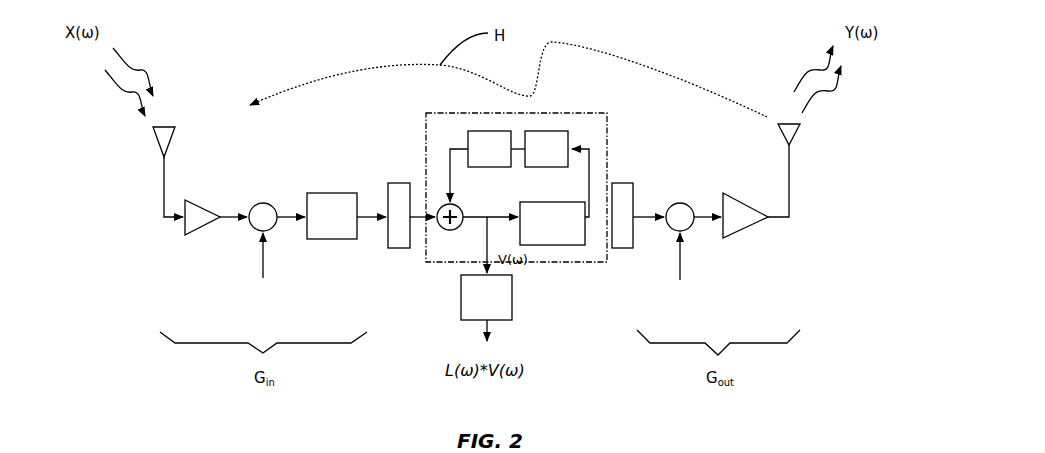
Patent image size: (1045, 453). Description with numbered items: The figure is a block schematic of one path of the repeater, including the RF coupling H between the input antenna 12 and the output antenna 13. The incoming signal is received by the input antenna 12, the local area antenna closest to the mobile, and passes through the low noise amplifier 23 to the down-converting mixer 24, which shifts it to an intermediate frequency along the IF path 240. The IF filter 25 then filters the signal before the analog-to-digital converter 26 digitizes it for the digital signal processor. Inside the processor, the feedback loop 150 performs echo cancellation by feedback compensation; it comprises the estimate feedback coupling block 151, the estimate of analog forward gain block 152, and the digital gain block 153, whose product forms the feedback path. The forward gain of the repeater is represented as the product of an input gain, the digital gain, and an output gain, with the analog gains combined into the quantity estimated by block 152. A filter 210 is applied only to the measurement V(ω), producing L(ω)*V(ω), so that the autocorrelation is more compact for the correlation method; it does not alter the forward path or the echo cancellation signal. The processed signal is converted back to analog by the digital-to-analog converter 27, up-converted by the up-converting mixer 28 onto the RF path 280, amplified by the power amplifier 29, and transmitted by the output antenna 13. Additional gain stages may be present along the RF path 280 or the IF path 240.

The input antenna 12 is at (155, 135).
The output antenna 13 is at (793, 138).
The low noise amplifier 23 is at (203, 205).
The down-converting mixer 24 is at (268, 203).
The IF path 240 is at (293, 219).
The IF filter 25 is at (337, 193).
The analog-to-digital converter 26 is at (399, 250).
The feedback loop 150 is at (426, 142).
The estimate feedback coupling block 151 is at (490, 131).
The estimate of analog forward gain block 152 is at (550, 131).
The digital gain block 153 is at (547, 246).
The filter 210 is at (461, 300).
The digital-to-analog converter 27 is at (620, 250).
The up-converting mixer 28 is at (684, 203).
The RF path 280 is at (697, 220).
The power amplifier 29 is at (742, 232).